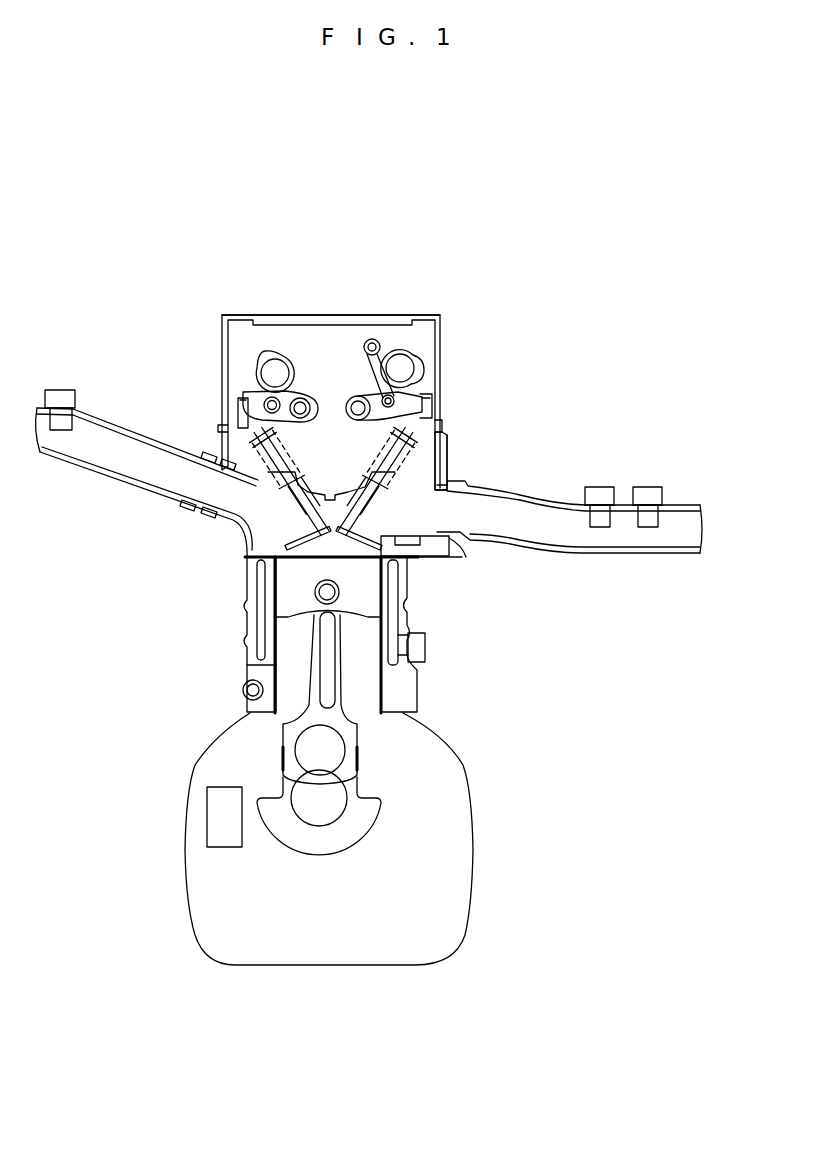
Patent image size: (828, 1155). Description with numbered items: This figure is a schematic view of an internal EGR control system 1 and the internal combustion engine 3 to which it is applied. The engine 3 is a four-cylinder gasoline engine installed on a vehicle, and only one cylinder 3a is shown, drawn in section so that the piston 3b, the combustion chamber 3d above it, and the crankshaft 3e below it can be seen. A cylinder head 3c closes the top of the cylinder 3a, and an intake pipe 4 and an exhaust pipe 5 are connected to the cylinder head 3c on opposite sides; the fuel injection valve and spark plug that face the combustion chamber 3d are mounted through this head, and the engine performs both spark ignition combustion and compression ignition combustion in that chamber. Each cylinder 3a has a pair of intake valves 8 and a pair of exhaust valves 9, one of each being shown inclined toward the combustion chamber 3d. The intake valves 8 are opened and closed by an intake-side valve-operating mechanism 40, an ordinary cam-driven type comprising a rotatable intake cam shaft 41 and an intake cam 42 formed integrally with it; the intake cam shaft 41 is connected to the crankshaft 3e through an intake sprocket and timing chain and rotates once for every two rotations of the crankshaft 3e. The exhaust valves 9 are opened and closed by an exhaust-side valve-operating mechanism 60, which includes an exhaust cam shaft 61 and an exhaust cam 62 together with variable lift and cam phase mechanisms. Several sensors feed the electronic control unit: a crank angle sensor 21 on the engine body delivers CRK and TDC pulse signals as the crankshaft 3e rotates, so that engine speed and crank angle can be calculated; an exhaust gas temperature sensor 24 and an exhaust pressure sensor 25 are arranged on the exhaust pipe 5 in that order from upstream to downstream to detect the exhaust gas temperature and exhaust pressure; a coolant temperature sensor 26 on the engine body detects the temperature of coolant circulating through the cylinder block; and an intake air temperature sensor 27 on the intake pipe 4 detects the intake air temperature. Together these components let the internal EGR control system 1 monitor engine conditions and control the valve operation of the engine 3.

The internal EGR control system 1 is at (455, 186).
The internal combustion engine 3 is at (314, 302).
The cylinder 3a is at (255, 668).
The piston 3b is at (290, 587).
The cylinder head 3c is at (447, 447).
The combustion chamber 3d is at (338, 553).
The crankshaft 3e is at (335, 812).
The intake pipe 4 is at (115, 480).
The exhaust pipe 5 is at (672, 560).
The intake valve 8 is at (338, 533).
The exhaust valve 9 is at (340, 533).
The crank angle sensor 21 is at (207, 825).
The exhaust gas temperature sensor 24 is at (600, 486).
The exhaust pressure sensor 25 is at (648, 486).
The coolant temperature sensor 26 is at (426, 650).
The intake air temperature sensor 27 is at (62, 389).
The intake-side valve-operating mechanism 40 is at (256, 348).
The intake cam shaft 41 is at (275, 373).
The intake cam 42 is at (272, 354).
The exhaust-side valve-operating mechanism 60 is at (389, 334).
The exhaust cam shaft 61 is at (402, 360).
The exhaust cam 62 is at (420, 372).